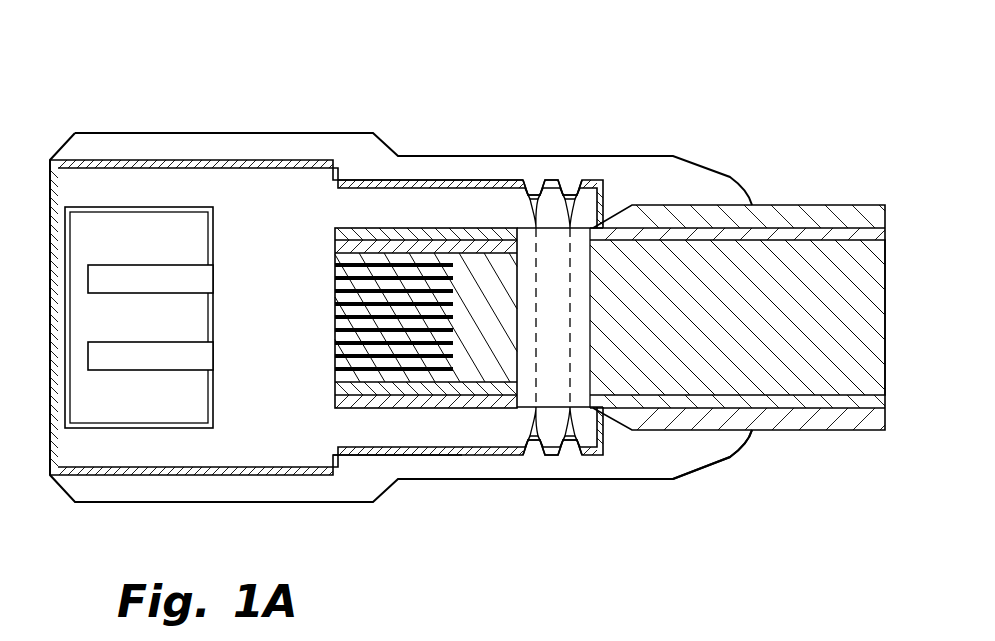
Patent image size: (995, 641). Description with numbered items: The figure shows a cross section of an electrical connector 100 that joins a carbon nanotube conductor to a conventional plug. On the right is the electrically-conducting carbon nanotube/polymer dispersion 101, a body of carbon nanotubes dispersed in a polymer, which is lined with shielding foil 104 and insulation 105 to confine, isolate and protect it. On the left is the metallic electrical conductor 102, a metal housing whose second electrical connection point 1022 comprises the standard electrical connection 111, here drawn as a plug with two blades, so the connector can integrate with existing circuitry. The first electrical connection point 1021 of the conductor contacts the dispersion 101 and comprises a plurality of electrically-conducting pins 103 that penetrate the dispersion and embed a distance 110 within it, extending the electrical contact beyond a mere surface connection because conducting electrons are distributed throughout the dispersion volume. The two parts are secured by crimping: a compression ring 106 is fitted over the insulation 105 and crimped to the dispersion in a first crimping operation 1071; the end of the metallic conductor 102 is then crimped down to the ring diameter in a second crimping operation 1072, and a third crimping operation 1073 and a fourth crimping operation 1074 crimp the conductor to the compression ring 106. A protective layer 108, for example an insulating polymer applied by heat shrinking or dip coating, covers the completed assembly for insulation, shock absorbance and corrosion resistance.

The electrical connector 100 is at (196, 44).
The metallic electrical conductor 102 is at (208, 188).
The standard electrical connection 111 is at (167, 273).
The second electrical connection point 1022 is at (215, 357).
The first electrical connection point 1021 is at (346, 322).
The electrically-conducting pins 103 is at (348, 272).
The first crimping operation 1071 is at (555, 313).
The second crimping operation 1072 is at (602, 93).
The compression ring 106 is at (605, 150).
The third crimping operation 1073 is at (533, 456).
The fourth crimping operation 1074 is at (570, 456).
The distance 110 is at (462, 518).
The protective layer 108 is at (700, 472).
The electrically-conducting carbon nanotube/polymer dispersion 101 is at (778, 335).
The shielding foil 104 is at (778, 418).
The insulation 105 is at (854, 431).